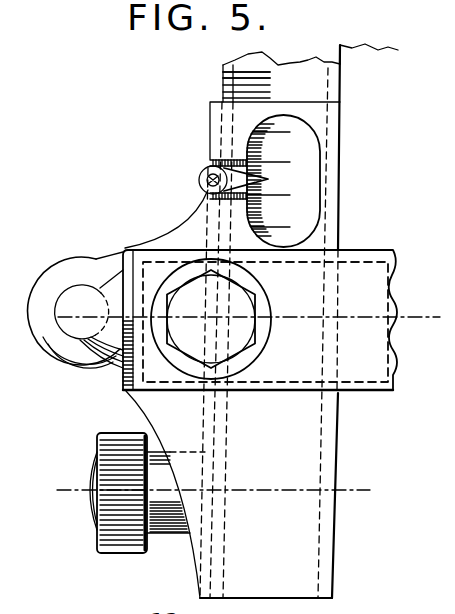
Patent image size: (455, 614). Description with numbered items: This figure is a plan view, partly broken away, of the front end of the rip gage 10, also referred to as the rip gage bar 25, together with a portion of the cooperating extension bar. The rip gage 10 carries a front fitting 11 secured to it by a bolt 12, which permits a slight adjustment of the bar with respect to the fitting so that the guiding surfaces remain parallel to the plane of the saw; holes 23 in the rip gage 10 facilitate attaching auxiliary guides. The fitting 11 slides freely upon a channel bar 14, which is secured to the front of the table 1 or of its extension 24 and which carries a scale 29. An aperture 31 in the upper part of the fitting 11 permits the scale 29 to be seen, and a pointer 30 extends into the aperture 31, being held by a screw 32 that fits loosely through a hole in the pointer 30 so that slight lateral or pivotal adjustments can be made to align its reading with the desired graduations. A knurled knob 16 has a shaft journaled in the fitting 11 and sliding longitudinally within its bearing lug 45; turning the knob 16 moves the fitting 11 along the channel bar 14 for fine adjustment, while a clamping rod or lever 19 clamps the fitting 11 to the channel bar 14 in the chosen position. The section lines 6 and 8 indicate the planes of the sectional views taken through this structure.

The table 1 is at (393, 66).
The channel bar 14 is at (316, 66).
The holes 23 is at (269, 77).
The scale 29 is at (225, 88).
The front fitting 11 is at (210, 128).
The aperture 31 is at (318, 152).
The extension 24 is at (280, 180).
The screw 32 is at (205, 179).
The pointer 30 is at (210, 192).
The rip gage 10 is at (360, 268).
The rip gage bar 25 is at (285, 302).
The bolt 12 is at (187, 352).
The clamping rod or lever 19 is at (74, 263).
The section line 6- 6 is at (37, 316).
The knurled knob 16 is at (115, 548).
The bearing lug 45 is at (182, 538).
The section line 8- 8 is at (57, 490).